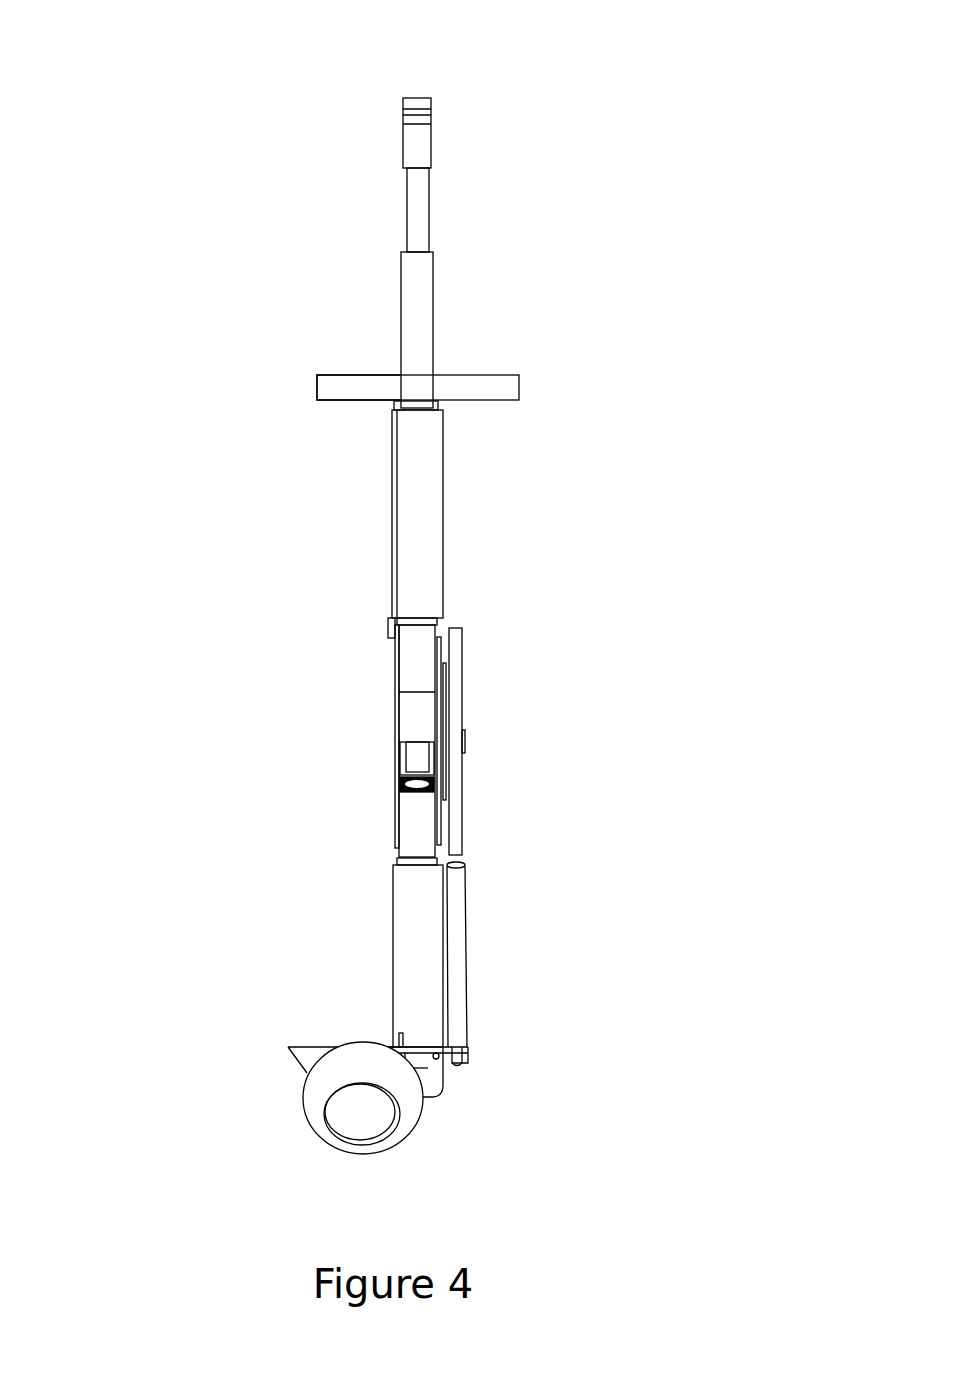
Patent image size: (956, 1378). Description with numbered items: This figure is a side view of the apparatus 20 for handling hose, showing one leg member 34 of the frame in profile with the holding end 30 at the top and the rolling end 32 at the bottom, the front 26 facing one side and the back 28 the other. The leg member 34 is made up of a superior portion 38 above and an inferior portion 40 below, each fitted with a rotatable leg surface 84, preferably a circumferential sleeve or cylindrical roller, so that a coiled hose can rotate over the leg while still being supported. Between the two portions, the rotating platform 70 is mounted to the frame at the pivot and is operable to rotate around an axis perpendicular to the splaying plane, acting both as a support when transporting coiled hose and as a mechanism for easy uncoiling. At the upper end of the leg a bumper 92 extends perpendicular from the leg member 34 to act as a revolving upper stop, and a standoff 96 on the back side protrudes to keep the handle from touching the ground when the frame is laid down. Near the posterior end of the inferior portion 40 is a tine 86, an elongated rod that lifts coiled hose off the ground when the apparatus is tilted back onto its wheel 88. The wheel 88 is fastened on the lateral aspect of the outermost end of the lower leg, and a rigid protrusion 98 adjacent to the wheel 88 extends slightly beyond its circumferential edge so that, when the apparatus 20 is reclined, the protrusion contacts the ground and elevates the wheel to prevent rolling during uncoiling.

The apparatus 20 is at (653, 272).
The front 26 is at (515, 740).
The back 28 is at (312, 735).
The holding end 30 is at (419, 88).
The rolling end 32 is at (438, 1130).
The leg member 34 is at (258, 724).
The superior portion 38 is at (422, 483).
The inferior portion 40 is at (404, 896).
The rotating platform 70 is at (455, 682).
The rotatable leg surface 84 is at (258, 724).
The tine 86 is at (457, 962).
The wheel 88 is at (319, 1095).
The bumper 92 is at (482, 387).
The standoff 96 is at (338, 390).
The rigid protrusion 98 is at (307, 1055).